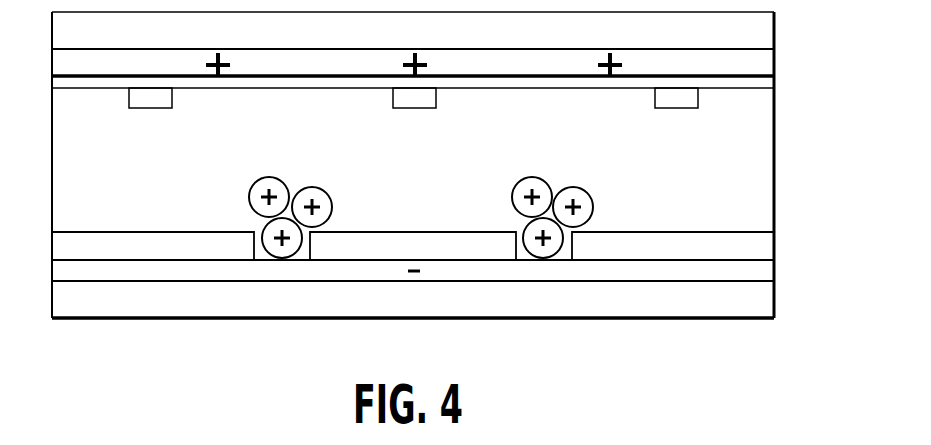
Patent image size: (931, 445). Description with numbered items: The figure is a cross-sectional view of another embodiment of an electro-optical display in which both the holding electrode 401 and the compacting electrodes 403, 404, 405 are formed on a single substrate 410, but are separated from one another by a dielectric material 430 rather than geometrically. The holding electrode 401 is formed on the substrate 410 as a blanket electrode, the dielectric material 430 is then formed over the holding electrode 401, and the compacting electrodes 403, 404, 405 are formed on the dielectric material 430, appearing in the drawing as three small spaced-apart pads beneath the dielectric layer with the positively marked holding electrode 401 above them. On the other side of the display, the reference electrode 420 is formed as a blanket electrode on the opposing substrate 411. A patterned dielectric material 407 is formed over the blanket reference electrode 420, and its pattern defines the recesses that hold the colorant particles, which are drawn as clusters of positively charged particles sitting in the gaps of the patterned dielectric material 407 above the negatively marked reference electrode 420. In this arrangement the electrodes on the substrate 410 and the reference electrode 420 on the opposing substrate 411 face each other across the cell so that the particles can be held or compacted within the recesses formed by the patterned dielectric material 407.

The substrate 410 is at (763, 27).
The holding electrode 401 is at (755, 62).
The dielectric material 430 is at (750, 84).
The compacting electrode 403 is at (153, 100).
The compacting electrode 404 is at (408, 100).
The compacting electrode 405 is at (668, 100).
The patterned dielectric material 407 is at (765, 253).
The reference electrode 420 is at (765, 265).
The opposing substrate 411 is at (755, 300).